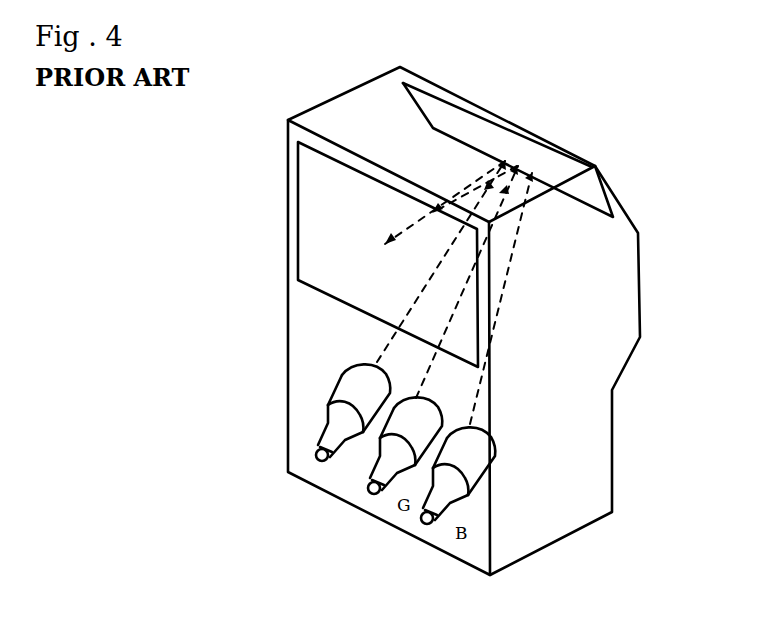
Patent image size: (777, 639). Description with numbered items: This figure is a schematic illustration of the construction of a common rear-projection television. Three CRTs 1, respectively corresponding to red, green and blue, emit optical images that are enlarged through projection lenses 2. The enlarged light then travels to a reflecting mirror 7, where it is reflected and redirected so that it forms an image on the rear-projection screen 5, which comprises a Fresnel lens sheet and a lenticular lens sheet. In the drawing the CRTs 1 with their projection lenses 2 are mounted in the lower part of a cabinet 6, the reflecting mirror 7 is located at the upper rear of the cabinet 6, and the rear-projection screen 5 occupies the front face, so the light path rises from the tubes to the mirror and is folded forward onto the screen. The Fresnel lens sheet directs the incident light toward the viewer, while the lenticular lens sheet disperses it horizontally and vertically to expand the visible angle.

The CRT 1 is at (315, 409).
The projection lens 2 is at (348, 385).
The rear-projection screen 5 is at (325, 222).
The cabinet 6 is at (582, 443).
The reflecting mirror 7 is at (558, 167).